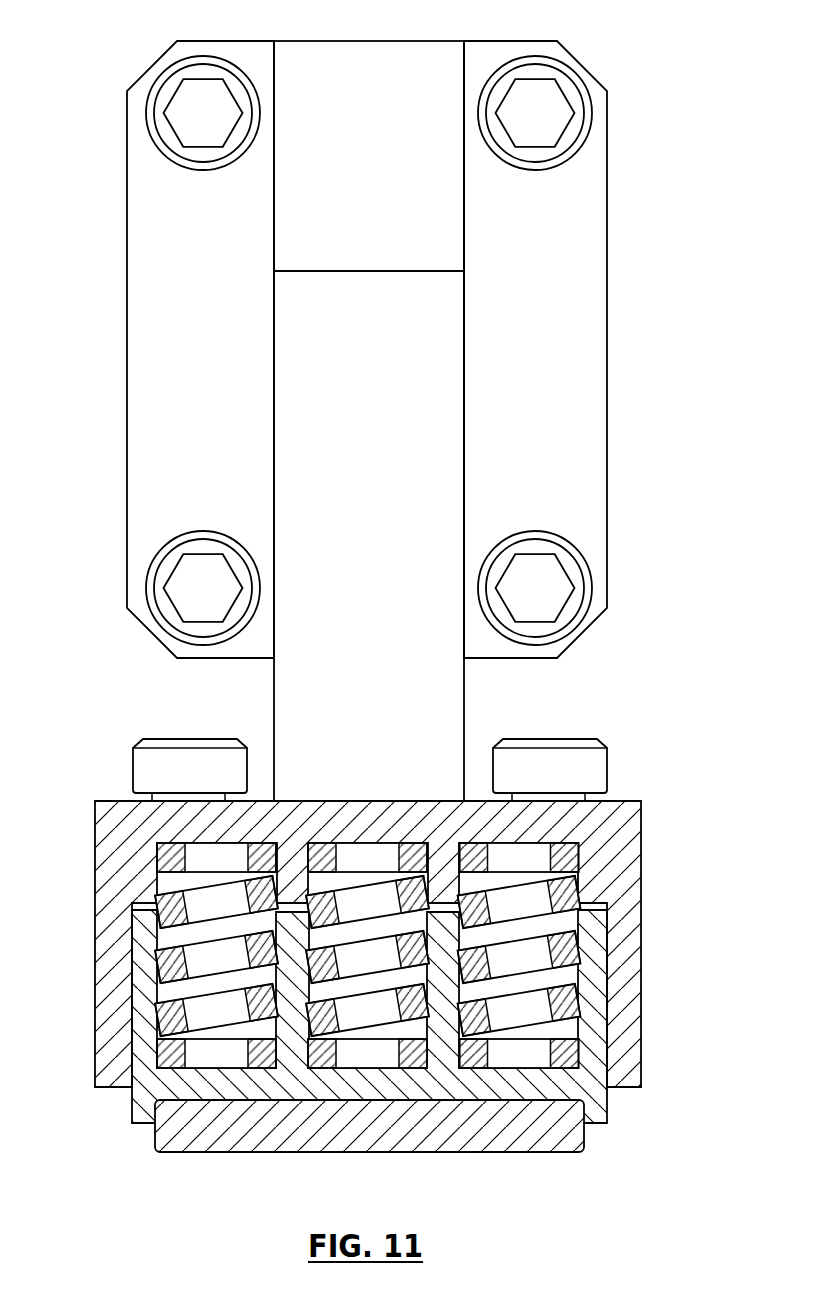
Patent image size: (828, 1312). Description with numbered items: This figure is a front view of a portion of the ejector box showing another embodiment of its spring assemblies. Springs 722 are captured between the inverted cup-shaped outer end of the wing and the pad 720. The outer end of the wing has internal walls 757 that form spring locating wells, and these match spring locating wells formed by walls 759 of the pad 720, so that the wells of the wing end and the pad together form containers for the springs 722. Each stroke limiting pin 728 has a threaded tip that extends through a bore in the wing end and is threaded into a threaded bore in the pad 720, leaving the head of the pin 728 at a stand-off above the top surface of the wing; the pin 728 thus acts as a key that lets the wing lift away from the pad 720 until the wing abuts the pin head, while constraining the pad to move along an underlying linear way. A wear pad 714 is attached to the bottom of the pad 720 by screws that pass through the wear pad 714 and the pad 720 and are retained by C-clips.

The wear pad 714 is at (270, 1152).
The pad 720 is at (130, 1097).
The springs 722 is at (641, 873).
The stroke limiting pin 728 is at (165, 740).
The internal walls 757 is at (550, 901).
The walls 759 is at (463, 992).